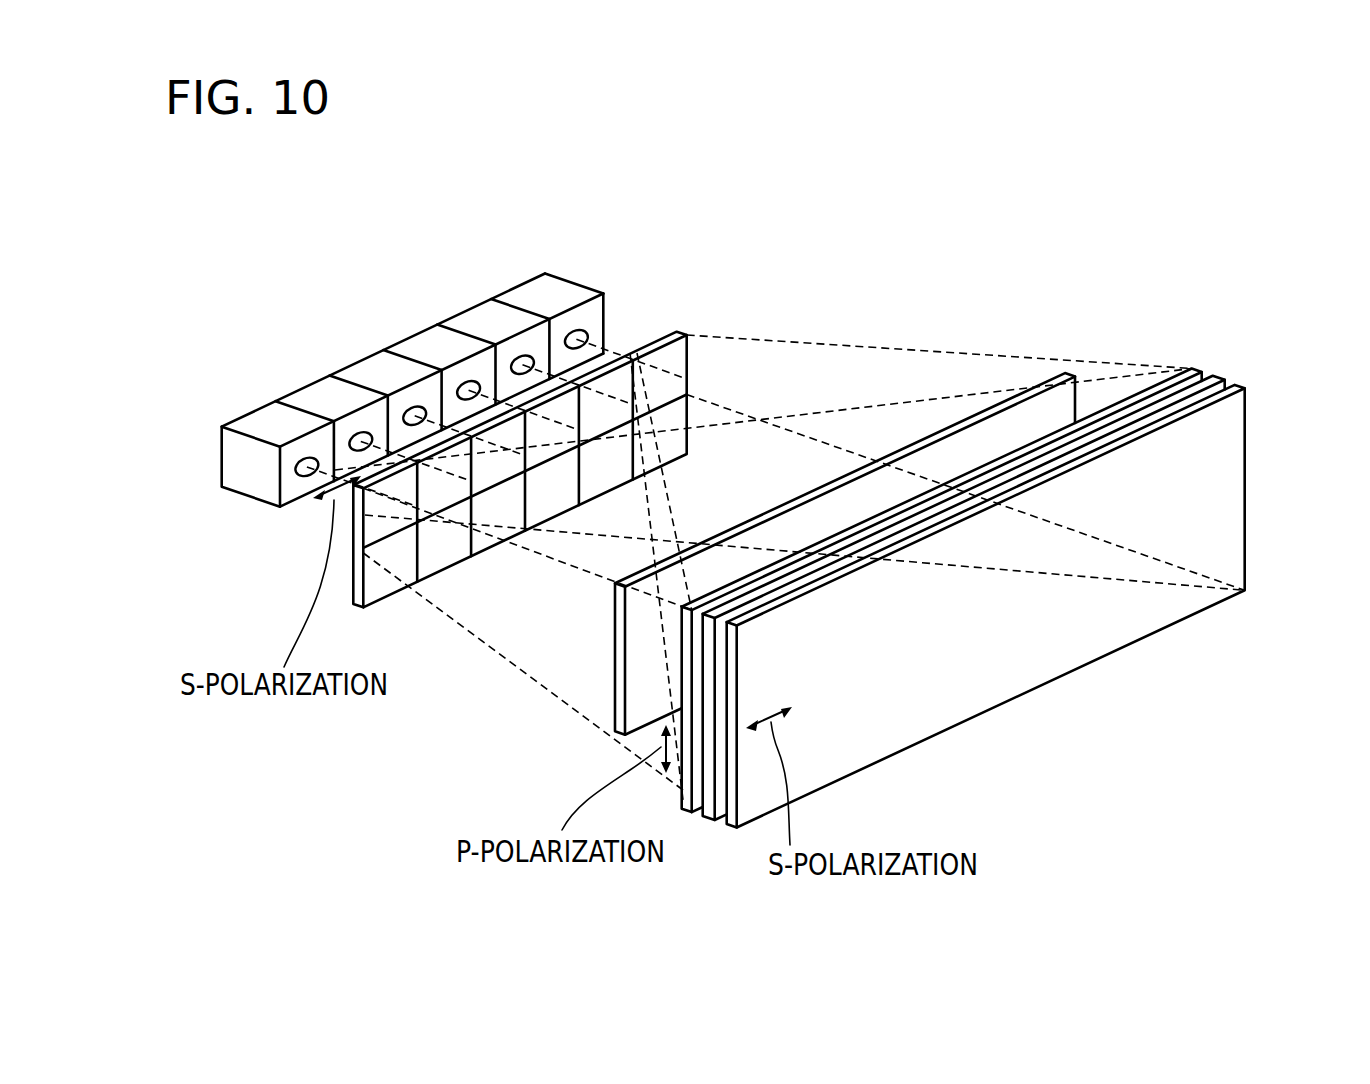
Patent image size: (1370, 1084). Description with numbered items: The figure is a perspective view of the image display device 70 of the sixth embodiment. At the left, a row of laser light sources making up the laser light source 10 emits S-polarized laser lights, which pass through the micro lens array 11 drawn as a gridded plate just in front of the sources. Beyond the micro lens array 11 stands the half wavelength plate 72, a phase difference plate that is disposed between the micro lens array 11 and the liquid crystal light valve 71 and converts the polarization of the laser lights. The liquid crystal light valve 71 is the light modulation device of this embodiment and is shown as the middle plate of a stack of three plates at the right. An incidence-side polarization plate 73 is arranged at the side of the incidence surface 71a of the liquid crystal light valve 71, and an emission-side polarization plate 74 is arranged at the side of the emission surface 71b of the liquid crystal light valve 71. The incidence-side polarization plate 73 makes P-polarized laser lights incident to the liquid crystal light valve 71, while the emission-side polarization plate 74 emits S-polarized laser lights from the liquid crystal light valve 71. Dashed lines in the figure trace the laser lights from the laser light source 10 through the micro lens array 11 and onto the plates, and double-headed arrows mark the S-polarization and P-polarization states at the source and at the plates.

The laser light source 10 is at (488, 279).
The micro lens array 11 is at (688, 333).
The image display device 70 is at (912, 538).
The liquid crystal light valve 71 is at (884, 613).
The incidence surface 71a is at (701, 665).
The emission surface 71b is at (738, 800).
The half wavelength plate 72 is at (613, 648).
The incidence-side polarization plate 73 is at (1192, 369).
The emission-side polarization plate 74 is at (1242, 388).